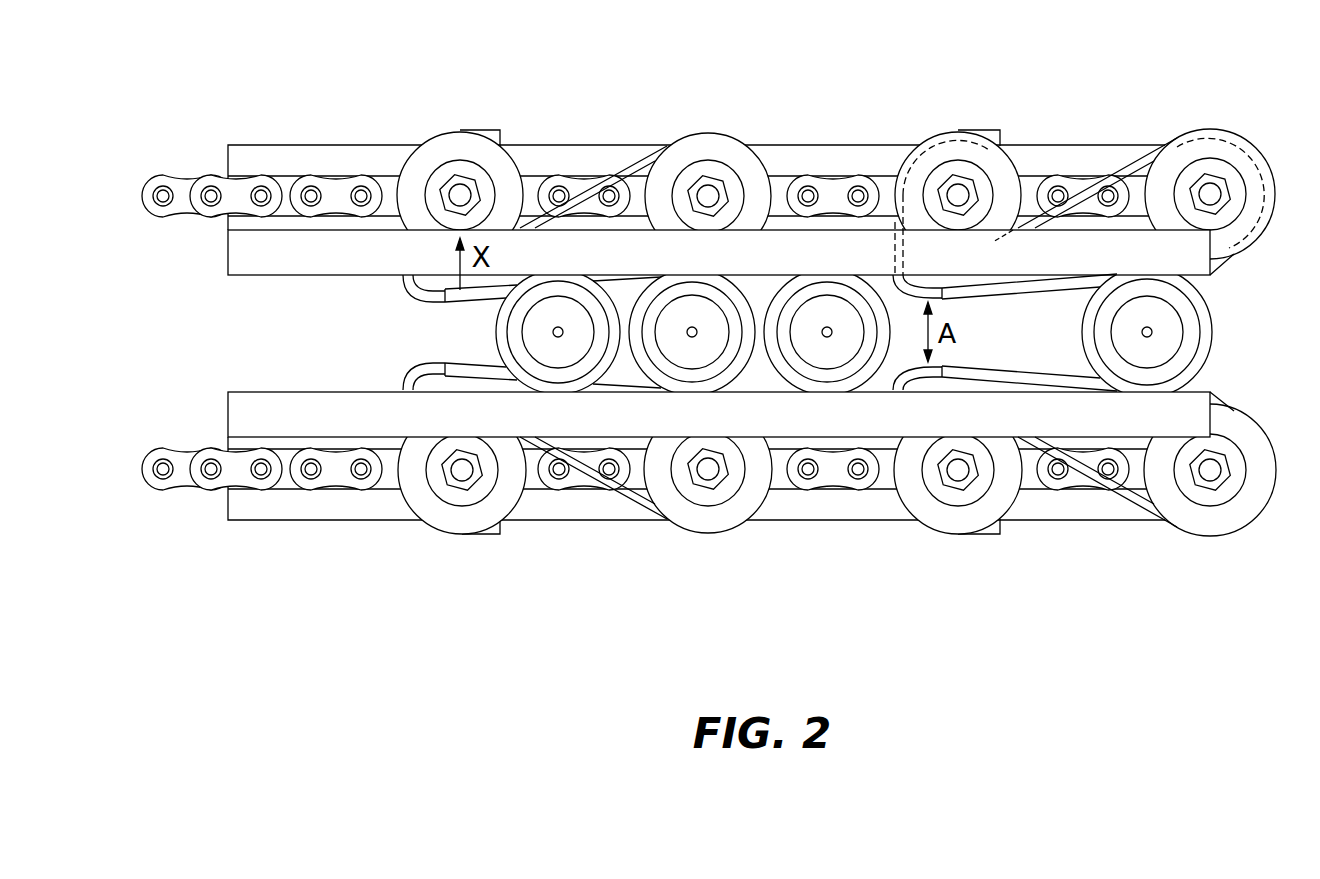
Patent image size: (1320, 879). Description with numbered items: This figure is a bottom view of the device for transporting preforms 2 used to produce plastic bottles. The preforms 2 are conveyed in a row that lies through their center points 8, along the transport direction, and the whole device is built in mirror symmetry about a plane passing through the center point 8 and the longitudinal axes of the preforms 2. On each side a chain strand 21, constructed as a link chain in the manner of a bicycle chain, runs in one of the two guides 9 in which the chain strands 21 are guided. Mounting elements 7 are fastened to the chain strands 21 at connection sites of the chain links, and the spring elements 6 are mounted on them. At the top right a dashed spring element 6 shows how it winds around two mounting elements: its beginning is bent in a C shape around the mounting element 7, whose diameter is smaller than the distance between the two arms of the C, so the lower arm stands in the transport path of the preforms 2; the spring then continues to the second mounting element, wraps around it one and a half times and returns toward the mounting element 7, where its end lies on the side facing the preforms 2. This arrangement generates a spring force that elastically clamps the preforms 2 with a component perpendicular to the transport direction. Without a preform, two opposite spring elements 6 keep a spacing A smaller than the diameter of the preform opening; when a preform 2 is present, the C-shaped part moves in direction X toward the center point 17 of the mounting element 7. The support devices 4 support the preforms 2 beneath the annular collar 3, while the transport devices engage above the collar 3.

The preform 2 is at (827, 332).
The annular collar 3 is at (1207, 335).
The support device 4 is at (238, 413).
The spring element 6 is at (1112, 173).
The mounting element 7 is at (709, 329).
The center point 8 is at (558, 332).
The guide 9 is at (238, 510).
The center point of mounting element 17 is at (465, 196).
The chain strand 21 is at (325, 186).